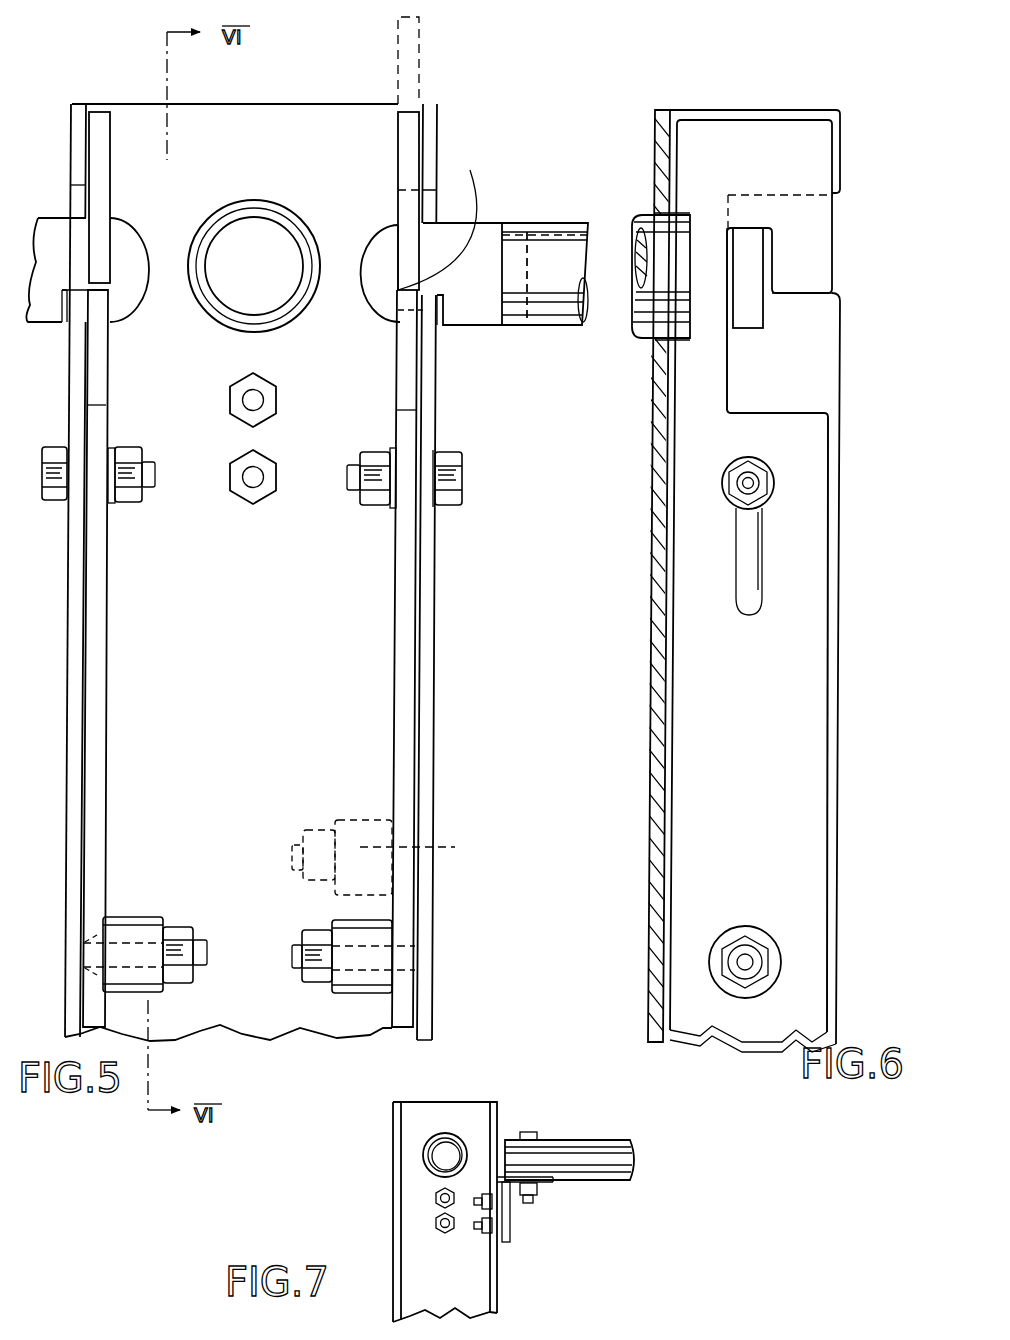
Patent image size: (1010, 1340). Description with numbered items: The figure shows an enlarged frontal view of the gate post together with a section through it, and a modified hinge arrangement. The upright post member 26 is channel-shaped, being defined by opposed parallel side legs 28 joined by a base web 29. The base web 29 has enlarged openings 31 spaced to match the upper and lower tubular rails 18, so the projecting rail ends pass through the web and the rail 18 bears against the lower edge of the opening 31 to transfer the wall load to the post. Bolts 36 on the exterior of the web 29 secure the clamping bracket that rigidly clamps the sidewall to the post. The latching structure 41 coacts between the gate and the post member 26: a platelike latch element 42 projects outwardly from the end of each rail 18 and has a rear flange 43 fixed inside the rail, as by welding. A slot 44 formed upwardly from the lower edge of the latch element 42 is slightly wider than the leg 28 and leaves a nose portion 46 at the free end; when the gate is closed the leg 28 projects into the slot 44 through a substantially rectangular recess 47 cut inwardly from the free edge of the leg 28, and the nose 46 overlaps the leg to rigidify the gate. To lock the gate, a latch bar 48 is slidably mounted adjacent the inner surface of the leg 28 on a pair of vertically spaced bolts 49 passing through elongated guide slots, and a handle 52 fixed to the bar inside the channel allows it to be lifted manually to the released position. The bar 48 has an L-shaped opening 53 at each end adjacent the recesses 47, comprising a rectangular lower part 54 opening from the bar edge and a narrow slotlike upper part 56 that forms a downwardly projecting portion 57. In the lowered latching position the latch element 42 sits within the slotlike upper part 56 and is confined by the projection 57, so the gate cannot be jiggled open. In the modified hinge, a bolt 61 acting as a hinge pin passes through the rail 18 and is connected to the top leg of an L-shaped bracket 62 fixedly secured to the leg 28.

In FIG. 5, the tubular rail 18 is at (293, 232).
In FIG. 6, the tubular rail 18 is at (661, 276).
In FIG. 7, the tubular rail 18 is at (455, 1140).
In FIG. 6, the upright post member 26 is at (645, 943).
In FIG. 7, the upright post member 26 is at (500, 1265).
In FIG. 5, the side leg 28 is at (72, 636).
In FIG. 6, the side leg 28 is at (818, 350).
In FIG. 7, the side leg 28 is at (497, 1112).
In FIG. 5, the base web 29 is at (231, 572).
In FIG. 6, the base web 29 is at (652, 846).
In FIG. 7, the base web 29 is at (465, 1285).
In FIG. 5, the enlarged opening 31 is at (268, 202).
In FIG. 6, the enlarged opening 31 is at (655, 213).
In FIG. 7, the enlarged opening 31 is at (440, 1140).
In FIG. 5, the bolt 36 is at (248, 400).
In FIG. 7, the bolt 36 is at (445, 1210).
In FIG. 5, the latching structure 41 is at (471, 170).
In FIG. 5, the latch element 42 is at (50, 300).
In FIG. 6, the latch element 42 is at (752, 258).
In FIG. 5, the rear flange 43 is at (525, 318).
In FIG. 5, the slot 44 is at (440, 320).
In FIG. 5, the nose portion 46 is at (388, 305).
In FIG. 6, the rectangular recess 47 is at (815, 293).
In FIG. 5, the latch bar 48 is at (424, 44).
In FIG. 6, the latch bar 48 is at (818, 678).
In FIG. 5, the bolt 49 is at (455, 480).
In FIG. 6, the bolt 49 is at (760, 485).
In FIG. 5, the handle 52 is at (365, 932).
In FIG. 6, the handle 52 is at (775, 952).
In FIG. 5, the L-shaped opening 53 is at (408, 408).
In FIG. 6, the L-shaped opening 53 is at (735, 410).
In FIG. 6, the lower part 54 is at (800, 413).
In FIG. 6, the upper part 56 is at (760, 245).
In FIG. 5, the downwardly projecting portion 57 is at (400, 270).
In FIG. 6, the downwardly projecting portion 57 is at (815, 258).
In FIG. 7, the bolt 61 is at (540, 1190).
In FIG. 7, the L-shaped bracket 62 is at (505, 1215).